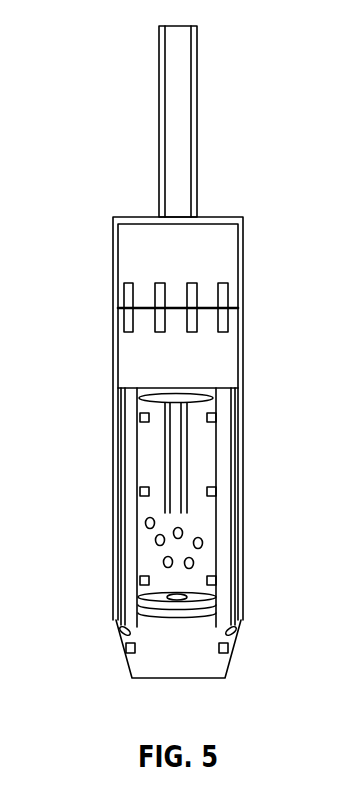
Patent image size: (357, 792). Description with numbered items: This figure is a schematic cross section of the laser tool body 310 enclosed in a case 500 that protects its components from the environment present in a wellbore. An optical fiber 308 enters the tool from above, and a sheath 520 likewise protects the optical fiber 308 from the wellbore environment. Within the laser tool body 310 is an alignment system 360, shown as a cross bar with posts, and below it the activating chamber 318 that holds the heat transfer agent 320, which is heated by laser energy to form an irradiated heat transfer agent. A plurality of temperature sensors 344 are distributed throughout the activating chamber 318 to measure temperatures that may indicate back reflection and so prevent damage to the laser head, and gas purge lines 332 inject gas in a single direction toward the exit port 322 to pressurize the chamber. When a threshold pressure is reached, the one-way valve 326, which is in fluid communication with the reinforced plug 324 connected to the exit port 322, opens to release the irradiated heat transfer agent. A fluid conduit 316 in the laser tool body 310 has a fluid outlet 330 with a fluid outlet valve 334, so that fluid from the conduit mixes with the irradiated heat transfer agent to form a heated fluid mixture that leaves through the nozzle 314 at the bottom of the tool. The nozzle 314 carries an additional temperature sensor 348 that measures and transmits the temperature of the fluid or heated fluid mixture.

The optical fiber 308 is at (197, 128).
The sheath 520 is at (159, 152).
The case 500 is at (113, 250).
The laser tool body 310 is at (113, 352).
The alignment system 360 is at (197, 298).
The fluid conduit 316 is at (127, 592).
The activating chamber 318 is at (107, 528).
The fluid outlet 330 is at (232, 629).
The gas purge lines 332 is at (170, 470).
The temperature sensors 344 is at (140, 417).
The heat transfer agent 320 is at (183, 533).
The reinforced plug 324 is at (200, 612).
The one-way valve 326 is at (187, 597).
The exit port 322 is at (197, 617).
The fluid outlet valve 334 is at (121, 630).
The nozzle 314 is at (131, 670).
The additional temperature sensor 348 is at (230, 649).